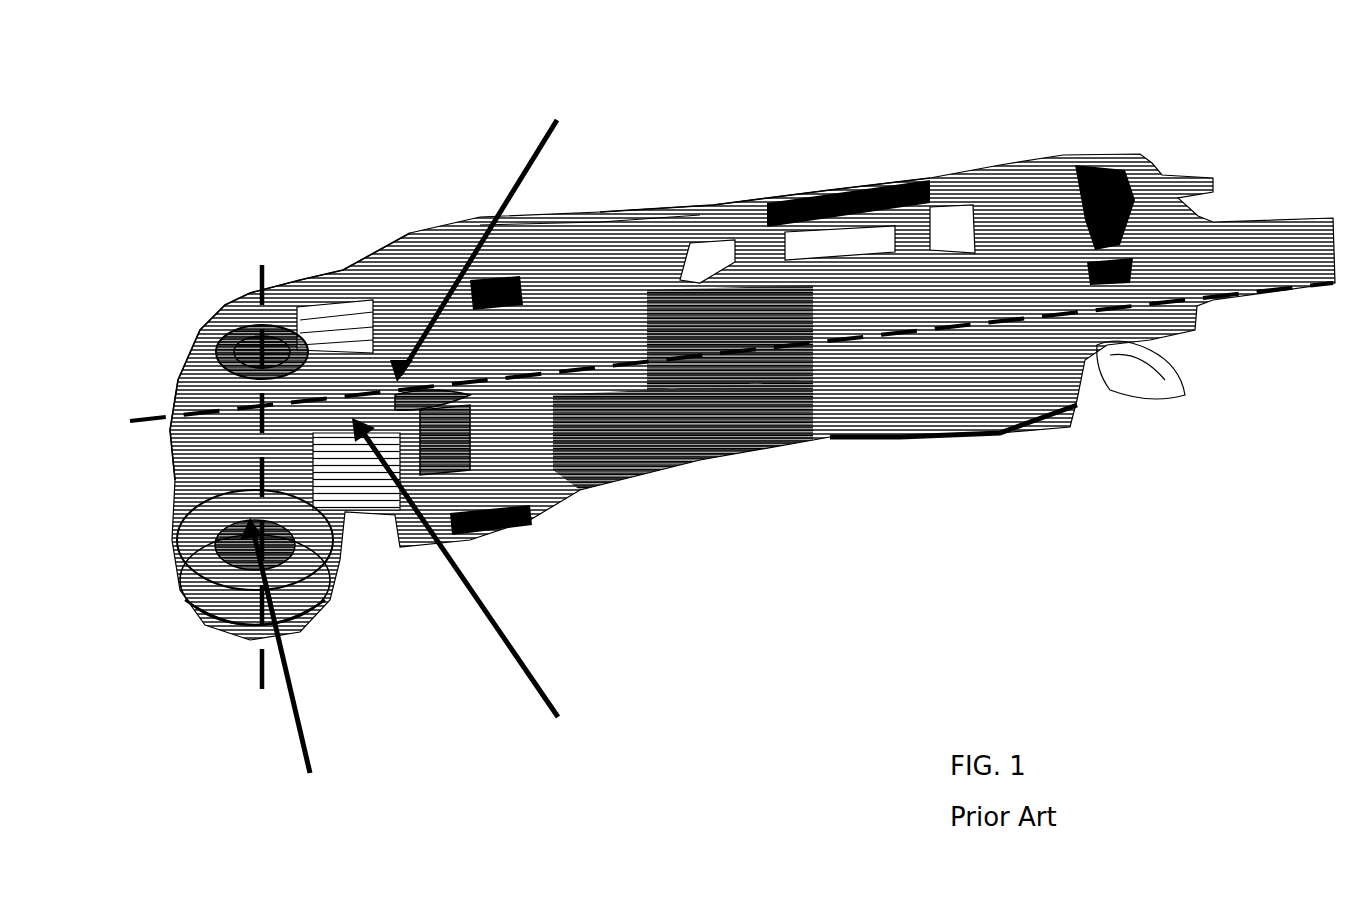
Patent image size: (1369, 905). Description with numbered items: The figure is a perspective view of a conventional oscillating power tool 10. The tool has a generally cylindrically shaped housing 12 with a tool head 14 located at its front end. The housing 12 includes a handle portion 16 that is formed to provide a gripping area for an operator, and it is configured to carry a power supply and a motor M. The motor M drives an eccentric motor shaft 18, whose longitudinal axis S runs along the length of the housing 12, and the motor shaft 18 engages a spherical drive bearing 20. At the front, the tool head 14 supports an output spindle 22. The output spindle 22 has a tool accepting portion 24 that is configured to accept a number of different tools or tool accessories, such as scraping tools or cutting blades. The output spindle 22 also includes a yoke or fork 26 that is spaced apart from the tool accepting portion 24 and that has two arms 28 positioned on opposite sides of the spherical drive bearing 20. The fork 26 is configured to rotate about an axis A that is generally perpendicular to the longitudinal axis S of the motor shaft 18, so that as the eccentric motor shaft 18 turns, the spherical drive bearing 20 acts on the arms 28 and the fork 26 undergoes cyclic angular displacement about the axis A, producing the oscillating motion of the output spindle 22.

The oscillating power tool 10 is at (272, 150).
The housing 12 is at (786, 200).
The tool head 14 is at (338, 287).
The handle portion 16 is at (712, 215).
The eccentric motor shaft 18 is at (450, 537).
The spherical drive bearing 20 is at (494, 239).
The output spindle 22 is at (287, 666).
The tool accepting portion 24 is at (300, 615).
The fork 26 is at (471, 584).
The arms 28 is at (378, 335).
The motor M is at (742, 380).
The longitudinal axis of the motor shaft S is at (780, 385).
The axis A is at (252, 690).